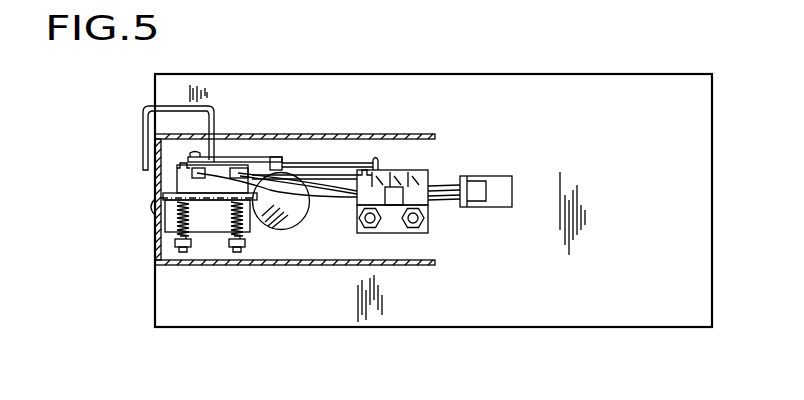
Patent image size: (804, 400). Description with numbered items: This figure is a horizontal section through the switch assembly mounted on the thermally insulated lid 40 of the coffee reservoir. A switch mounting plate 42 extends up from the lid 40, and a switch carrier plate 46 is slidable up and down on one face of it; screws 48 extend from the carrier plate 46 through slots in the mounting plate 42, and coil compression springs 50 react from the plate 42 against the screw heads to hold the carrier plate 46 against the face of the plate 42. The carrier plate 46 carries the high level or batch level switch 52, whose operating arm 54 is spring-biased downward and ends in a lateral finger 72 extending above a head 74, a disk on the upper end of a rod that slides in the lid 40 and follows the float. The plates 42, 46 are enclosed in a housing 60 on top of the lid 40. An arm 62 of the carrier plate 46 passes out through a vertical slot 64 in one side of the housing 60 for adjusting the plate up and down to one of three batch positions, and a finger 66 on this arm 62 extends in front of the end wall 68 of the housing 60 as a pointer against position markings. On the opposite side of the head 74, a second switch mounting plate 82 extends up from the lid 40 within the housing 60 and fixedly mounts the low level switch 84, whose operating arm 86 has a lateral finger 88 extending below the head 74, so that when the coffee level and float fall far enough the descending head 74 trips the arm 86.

The lid 40 is at (485, 328).
The switch mounting plate 42 is at (226, 203).
The switch carrier plate 46 is at (152, 202).
The screws 48 is at (240, 253).
The coil compression springs 50 is at (233, 236).
The switch 52 is at (160, 172).
The operating arm 54 is at (260, 157).
The housing 60 is at (325, 268).
The arm 62 is at (216, 112).
The vertical slot 64 is at (218, 134).
The finger 66 is at (146, 128).
The end wall 68 is at (156, 250).
The lateral finger 72 is at (305, 178).
The head 74 is at (300, 226).
The second switch mounting plate 82 is at (428, 210).
The low level switch 84 is at (430, 168).
The operating arm 86 is at (363, 163).
The lateral finger 88 is at (272, 160).